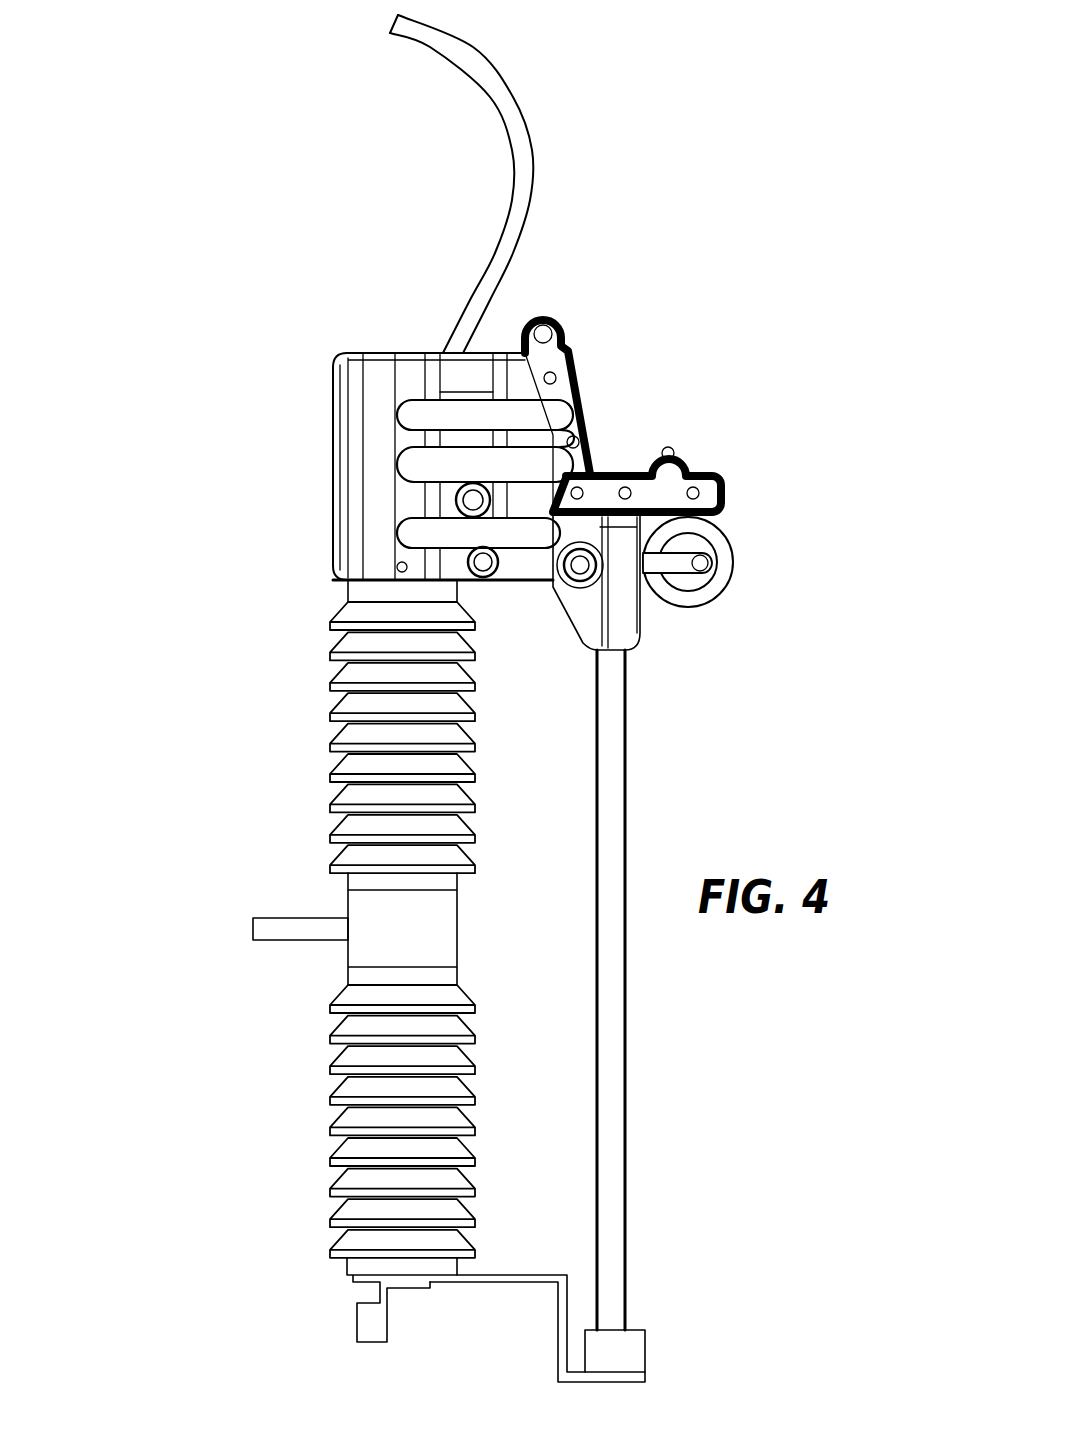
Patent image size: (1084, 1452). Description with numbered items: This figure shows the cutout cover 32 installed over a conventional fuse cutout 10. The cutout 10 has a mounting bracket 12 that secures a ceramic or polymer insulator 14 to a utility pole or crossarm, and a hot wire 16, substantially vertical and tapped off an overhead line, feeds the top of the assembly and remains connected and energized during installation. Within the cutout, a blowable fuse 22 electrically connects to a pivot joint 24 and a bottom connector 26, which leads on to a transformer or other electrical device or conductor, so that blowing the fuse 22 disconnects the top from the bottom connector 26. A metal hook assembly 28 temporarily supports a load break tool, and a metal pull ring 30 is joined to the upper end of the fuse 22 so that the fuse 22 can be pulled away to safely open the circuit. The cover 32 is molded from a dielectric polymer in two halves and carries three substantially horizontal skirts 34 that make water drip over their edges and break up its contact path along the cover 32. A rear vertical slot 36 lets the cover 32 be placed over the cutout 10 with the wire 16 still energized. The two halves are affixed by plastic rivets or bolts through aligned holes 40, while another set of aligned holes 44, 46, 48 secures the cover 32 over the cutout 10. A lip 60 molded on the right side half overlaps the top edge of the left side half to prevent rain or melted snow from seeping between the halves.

The fuse cutout 10 is at (263, 711).
The mounting bracket 12 is at (307, 941).
The insulator 14 is at (340, 612).
The hot wire 16 is at (533, 180).
The blowable fuse 22 is at (625, 730).
The pivot joint 24 is at (648, 1350).
The bottom connector 26 is at (392, 1320).
The hook assembly 28 is at (672, 563).
The pull ring 30 is at (733, 562).
The cutout cover 32 is at (580, 313).
The horizontal skirts 34 is at (410, 418).
The rear vertical slot 36 is at (331, 372).
The aligned holes 40 is at (624, 490).
The aligned hole 44 is at (470, 503).
The aligned hole 46 is at (482, 566).
The aligned hole 48 is at (578, 567).
The lip 60 is at (582, 377).